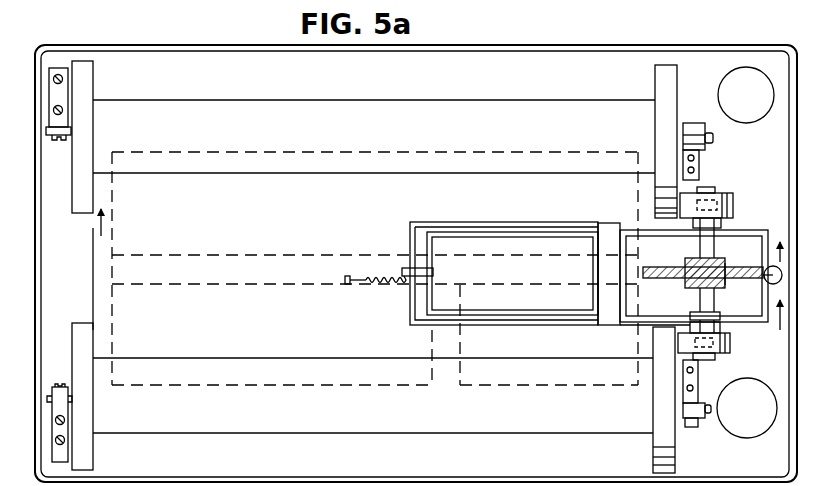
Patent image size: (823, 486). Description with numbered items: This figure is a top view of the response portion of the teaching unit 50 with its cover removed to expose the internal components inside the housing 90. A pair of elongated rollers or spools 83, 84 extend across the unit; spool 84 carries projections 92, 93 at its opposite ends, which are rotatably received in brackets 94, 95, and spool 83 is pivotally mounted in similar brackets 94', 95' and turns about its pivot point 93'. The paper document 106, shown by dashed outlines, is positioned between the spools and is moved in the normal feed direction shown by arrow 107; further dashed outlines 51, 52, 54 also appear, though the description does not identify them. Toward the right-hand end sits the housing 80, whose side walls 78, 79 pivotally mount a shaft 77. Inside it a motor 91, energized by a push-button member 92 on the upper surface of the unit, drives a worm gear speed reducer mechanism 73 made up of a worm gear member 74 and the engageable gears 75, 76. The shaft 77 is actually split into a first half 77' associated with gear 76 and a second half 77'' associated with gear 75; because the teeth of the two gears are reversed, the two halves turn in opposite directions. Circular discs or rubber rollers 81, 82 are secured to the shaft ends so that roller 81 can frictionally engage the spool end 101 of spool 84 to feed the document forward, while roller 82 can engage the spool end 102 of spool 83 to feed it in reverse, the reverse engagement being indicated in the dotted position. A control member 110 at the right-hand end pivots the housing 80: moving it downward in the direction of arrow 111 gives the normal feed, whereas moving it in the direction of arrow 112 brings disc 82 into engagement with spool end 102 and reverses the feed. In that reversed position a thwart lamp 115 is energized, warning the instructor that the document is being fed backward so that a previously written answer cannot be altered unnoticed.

The teaching unit 50 is at (727, 29).
The lower dashed region 51 is at (190, 383).
The upper dashed region 52 is at (278, 130).
The right dashed region 54 is at (520, 152).
The worm gear speed reducer mechanism 73 is at (726, 263).
The worm gear member 74 is at (662, 250).
The gear member 75 is at (727, 315).
The gear member 76 is at (728, 270).
The shaft 77 is at (722, 212).
The first shaft half 77' is at (695, 275).
The second shaft half 77'' is at (682, 305).
The side wall 78 is at (648, 228).
The side wall 79 is at (650, 326).
The housing 80 is at (489, 222).
The circular disc 81 is at (733, 206).
The circular disc 82 is at (730, 345).
The spool 83 is at (292, 432).
The spool 84 is at (352, 101).
The housing 90 is at (44, 292).
The motor 91 is at (556, 240).
The push-button member 92 is at (47, 138).
The projection 93 is at (708, 151).
The pivot point 93' is at (709, 393).
The bracket 94 is at (95, 137).
The bracket 94' is at (70, 396).
The bracket 95 is at (698, 119).
The bracket 95' is at (702, 434).
The spool member 101 is at (660, 80).
The spool member 102 is at (653, 462).
The document 106 is at (102, 263).
The arrow 107 is at (104, 232).
The control member 110 is at (770, 284).
The arrow 111 is at (780, 330).
The arrow 112 is at (780, 262).
The thwart lamp 115 is at (750, 114).